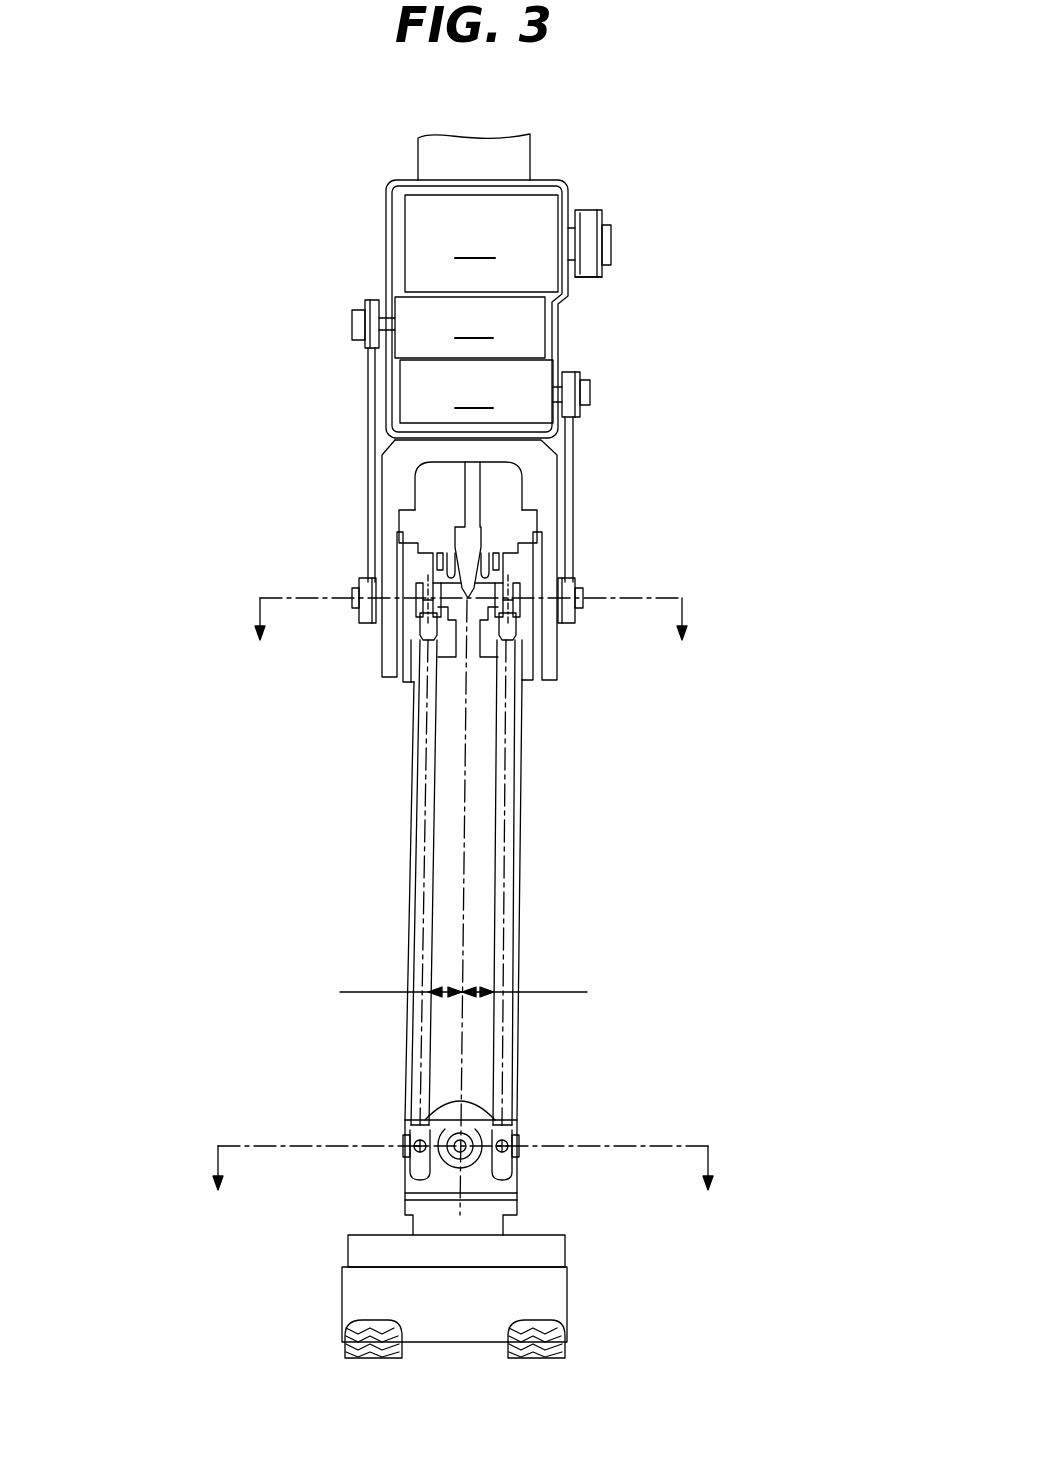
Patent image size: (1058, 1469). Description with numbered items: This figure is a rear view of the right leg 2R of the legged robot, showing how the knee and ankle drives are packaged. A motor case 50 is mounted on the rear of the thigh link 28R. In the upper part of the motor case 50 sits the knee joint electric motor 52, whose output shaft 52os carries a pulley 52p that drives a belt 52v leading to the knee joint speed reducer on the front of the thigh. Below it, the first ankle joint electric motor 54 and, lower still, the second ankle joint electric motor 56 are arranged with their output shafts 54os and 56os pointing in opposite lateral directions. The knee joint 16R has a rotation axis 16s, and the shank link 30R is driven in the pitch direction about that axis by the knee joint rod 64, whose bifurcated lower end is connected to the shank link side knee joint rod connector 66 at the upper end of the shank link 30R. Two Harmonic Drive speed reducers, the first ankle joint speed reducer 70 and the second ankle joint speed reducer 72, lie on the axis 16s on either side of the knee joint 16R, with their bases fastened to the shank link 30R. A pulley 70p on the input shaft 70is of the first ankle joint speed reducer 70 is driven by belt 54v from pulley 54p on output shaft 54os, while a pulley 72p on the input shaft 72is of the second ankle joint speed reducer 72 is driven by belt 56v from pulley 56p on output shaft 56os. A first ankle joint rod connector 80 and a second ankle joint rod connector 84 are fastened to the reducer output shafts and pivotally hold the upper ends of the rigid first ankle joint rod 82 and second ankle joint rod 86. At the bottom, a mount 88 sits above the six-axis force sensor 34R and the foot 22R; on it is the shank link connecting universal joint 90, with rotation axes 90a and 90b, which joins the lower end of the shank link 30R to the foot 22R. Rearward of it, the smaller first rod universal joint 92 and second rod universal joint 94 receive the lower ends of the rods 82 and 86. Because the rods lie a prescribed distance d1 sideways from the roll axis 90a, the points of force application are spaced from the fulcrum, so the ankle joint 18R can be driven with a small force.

The leg 2R is at (672, 129).
The thigh link 28R is at (530, 155).
The motor case 50 is at (388, 217).
The knee joint electric motor 52 is at (481, 243).
The belt 52v is at (583, 212).
The output shaft 52os is at (606, 260).
The pulley 52p is at (590, 278).
The first ankle joint electric motor 54 is at (470, 327).
The pulley 54p is at (366, 302).
The output shaft 54os is at (353, 323).
The belt 54v is at (370, 432).
The second ankle joint electric motor 56 is at (476, 391).
The pulley 56p is at (578, 380).
The output shaft 56os is at (591, 392).
The belt 56v is at (572, 470).
The knee joint 16R is at (337, 573).
The axis 16s is at (608, 598).
The knee joint rod 64 is at (464, 490).
The shank link side knee joint rod connector 66 is at (456, 544).
The first ankle joint rod connector 80 is at (430, 585).
The second ankle joint rod connector 84 is at (505, 588).
The pulley 70p is at (368, 624).
The input shaft 70is is at (355, 609).
The first ankle joint speed reducer 70 is at (414, 634).
The pulley 72p is at (575, 624).
The input shaft 72is is at (580, 606).
The second ankle joint speed reducer 72 is at (524, 642).
The first ankle joint rod 82 is at (417, 828).
The second ankle joint rod 86 is at (516, 838).
The shank link 30R is at (484, 934).
The prescribed distance d1 is at (463, 975).
The ankle joint 18R is at (540, 1086).
The mount 88 is at (518, 1190).
The rotation axis 90a is at (430, 1118).
The shank link connecting universal joint 90 is at (448, 1175).
The rotation axis 90b is at (590, 1146).
The first rod universal joint 92 is at (409, 1140).
The second rod universal joint 94 is at (514, 1138).
The six-axis force sensor 34R is at (510, 1230).
The foot 22R is at (547, 1302).